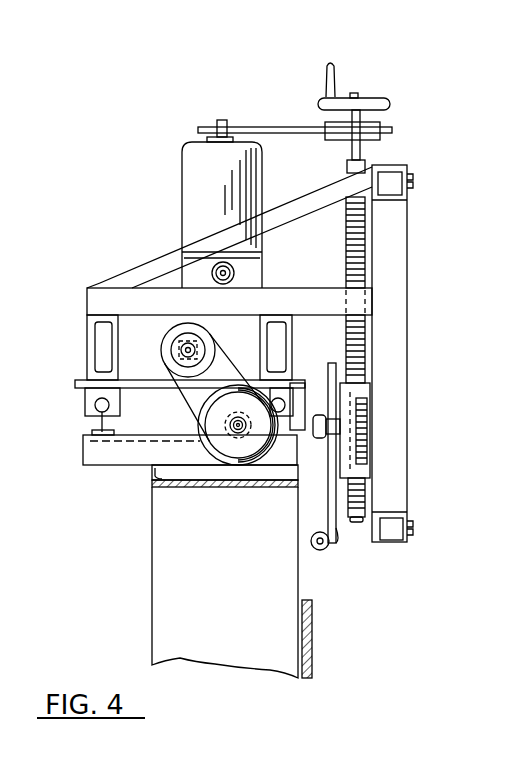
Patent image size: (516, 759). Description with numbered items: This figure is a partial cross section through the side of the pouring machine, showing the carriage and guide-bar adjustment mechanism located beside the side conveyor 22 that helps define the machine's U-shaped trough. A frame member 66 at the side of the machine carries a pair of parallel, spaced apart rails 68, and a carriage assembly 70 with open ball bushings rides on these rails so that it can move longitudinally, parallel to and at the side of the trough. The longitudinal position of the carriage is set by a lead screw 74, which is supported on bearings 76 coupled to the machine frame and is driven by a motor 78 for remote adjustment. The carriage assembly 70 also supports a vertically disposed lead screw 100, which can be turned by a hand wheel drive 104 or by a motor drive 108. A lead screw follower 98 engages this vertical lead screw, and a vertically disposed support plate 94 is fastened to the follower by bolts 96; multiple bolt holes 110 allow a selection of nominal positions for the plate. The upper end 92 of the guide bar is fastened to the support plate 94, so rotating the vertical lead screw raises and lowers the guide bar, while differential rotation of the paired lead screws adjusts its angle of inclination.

The side conveyor 22 is at (313, 648).
The frame member 66 is at (215, 487).
The rails 68 is at (94, 405).
The carriage assembly 70 is at (398, 262).
The lead screw 74 is at (189, 345).
The bearings 76 is at (168, 340).
The motor 78 is at (205, 428).
The upper end of the guide bar 92 is at (321, 553).
The support plate 94 is at (338, 528).
The bolts 96 is at (325, 428).
The lead screw followers 98 is at (355, 468).
The lead screw 100 is at (350, 218).
The hand wheel drive 104 is at (378, 98).
The motor drive 108 is at (200, 165).
The bolt holes 110 is at (368, 363).